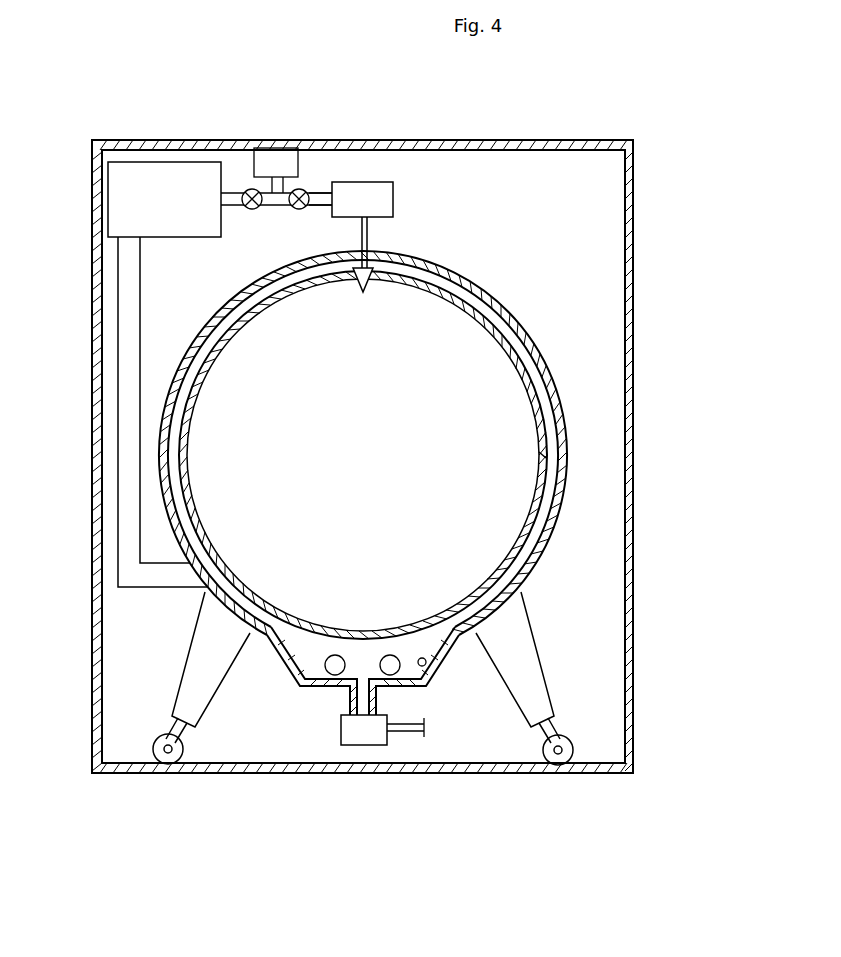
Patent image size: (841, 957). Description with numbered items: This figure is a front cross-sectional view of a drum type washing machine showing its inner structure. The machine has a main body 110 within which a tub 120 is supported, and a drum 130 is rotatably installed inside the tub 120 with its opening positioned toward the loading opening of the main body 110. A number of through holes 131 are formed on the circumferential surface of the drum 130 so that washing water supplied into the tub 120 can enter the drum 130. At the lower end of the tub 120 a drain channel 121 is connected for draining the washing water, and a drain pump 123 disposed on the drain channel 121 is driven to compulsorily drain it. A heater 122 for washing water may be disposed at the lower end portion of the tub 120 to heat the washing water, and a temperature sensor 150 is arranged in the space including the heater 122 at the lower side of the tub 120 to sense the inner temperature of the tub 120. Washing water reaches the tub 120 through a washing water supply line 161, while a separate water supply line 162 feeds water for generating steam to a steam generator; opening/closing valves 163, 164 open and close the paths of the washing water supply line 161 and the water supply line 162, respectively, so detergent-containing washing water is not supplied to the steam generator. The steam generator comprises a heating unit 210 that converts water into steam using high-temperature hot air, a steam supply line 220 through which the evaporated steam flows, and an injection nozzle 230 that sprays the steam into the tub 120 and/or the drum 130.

The main body 110 is at (485, 130).
The tub 120 is at (532, 342).
The drum 130 is at (543, 425).
The through holes 131 is at (542, 458).
The drain channel 121 is at (348, 700).
The heater for washing water 122 is at (391, 670).
The drain pump 123 is at (360, 735).
The temperature sensor 150 is at (423, 664).
The washing water supply line 161 is at (233, 196).
The water supply line 162 is at (322, 198).
The opening/closing valve 163 is at (252, 210).
The opening/closing valve 164 is at (295, 190).
The heating unit 210 is at (380, 188).
The steam supply line 220 is at (362, 233).
The injection nozzle 230 is at (362, 296).